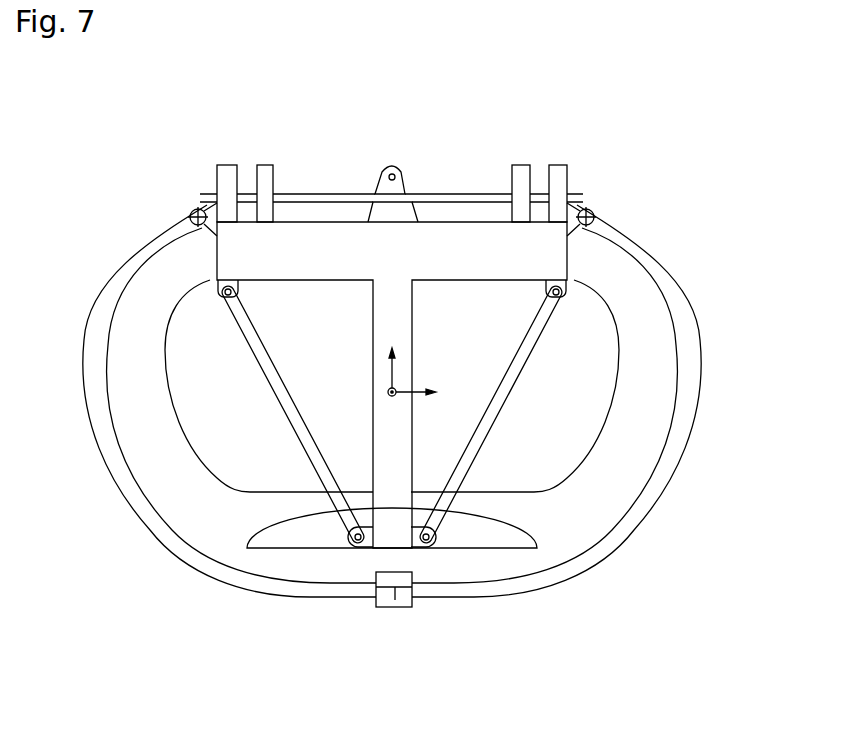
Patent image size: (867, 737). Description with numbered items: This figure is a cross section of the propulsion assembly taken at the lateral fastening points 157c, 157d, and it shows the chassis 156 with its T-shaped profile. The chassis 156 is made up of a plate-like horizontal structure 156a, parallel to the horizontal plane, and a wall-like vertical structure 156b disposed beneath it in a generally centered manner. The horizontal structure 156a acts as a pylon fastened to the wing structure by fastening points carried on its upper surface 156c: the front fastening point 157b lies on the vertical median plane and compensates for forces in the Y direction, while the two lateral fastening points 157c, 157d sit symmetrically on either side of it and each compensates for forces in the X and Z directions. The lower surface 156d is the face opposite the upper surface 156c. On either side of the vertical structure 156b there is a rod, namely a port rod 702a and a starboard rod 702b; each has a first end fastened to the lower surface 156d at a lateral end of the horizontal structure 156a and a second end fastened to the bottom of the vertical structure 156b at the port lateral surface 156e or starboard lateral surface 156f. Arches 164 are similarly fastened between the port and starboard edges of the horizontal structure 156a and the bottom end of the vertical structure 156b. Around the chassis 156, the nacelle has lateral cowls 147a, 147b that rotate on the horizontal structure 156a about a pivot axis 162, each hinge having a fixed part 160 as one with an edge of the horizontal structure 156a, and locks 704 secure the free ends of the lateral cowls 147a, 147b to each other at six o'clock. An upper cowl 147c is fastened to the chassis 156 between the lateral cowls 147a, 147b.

The chassis 156 is at (632, 202).
The horizontal structure 156a is at (510, 262).
The vertical structure 156b is at (390, 538).
The upper surface 156c is at (308, 200).
The lower surface 156d is at (485, 282).
The port lateral surface 156e is at (478, 538).
The starboard lateral surface 156f is at (247, 530).
The front fastening point 157b is at (393, 165).
The lateral fastening point 157c is at (227, 182).
The lateral fastening point 157d is at (568, 178).
The lateral cowl 147a is at (633, 513).
The lateral cowl 147b is at (118, 468).
The upper cowl 147c is at (492, 190).
The fixed part 160 is at (205, 206).
The pivot axis 162 is at (194, 226).
The arch 164 is at (255, 548).
The port rod 702a is at (607, 543).
The starboard rod 702b is at (247, 525).
The lock 704 is at (396, 607).